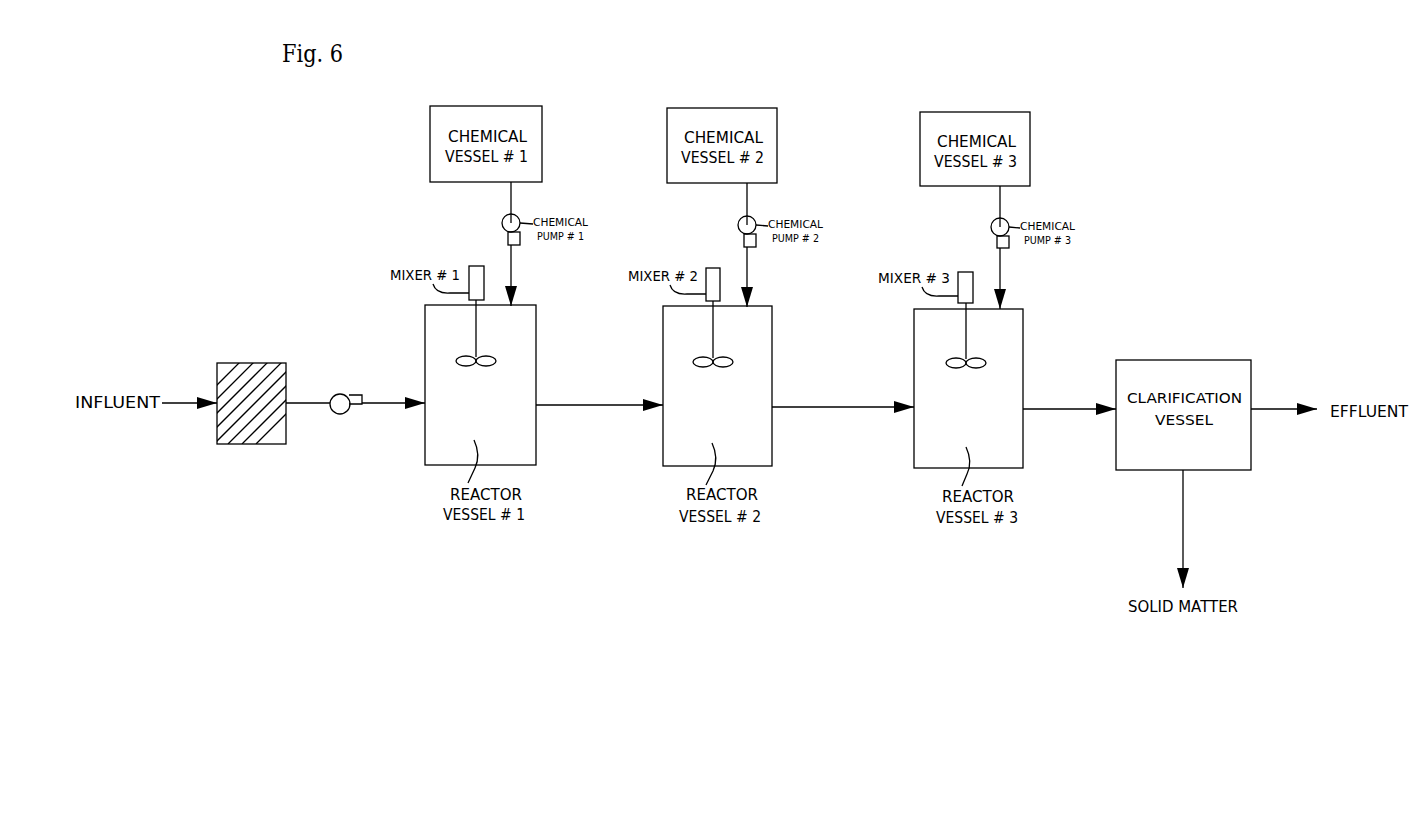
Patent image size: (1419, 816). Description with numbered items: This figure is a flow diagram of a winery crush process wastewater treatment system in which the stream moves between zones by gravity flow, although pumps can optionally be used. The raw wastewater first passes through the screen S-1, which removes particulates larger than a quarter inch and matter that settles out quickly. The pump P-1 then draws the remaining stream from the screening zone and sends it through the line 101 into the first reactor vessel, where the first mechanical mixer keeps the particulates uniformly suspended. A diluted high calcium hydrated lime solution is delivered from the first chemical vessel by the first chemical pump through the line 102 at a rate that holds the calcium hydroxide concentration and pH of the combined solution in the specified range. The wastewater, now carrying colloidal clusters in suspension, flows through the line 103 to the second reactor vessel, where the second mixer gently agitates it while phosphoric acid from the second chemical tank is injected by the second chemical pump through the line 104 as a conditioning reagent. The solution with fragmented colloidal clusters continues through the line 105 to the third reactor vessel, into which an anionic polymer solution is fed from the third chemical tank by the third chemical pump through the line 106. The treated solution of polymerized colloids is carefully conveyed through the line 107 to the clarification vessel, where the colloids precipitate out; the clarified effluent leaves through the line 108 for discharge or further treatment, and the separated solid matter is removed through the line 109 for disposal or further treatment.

The screen S-1 is at (262, 384).
The pump P-1 is at (340, 415).
The line 101 is at (369, 403).
The line 102 is at (513, 280).
The line 103 is at (577, 405).
The line 104 is at (749, 281).
The line 105 is at (836, 407).
The line 106 is at (1002, 284).
The line 107 is at (1050, 409).
The effluent line 108 is at (1259, 409).
The solid matter discharge line 109 is at (1183, 503).